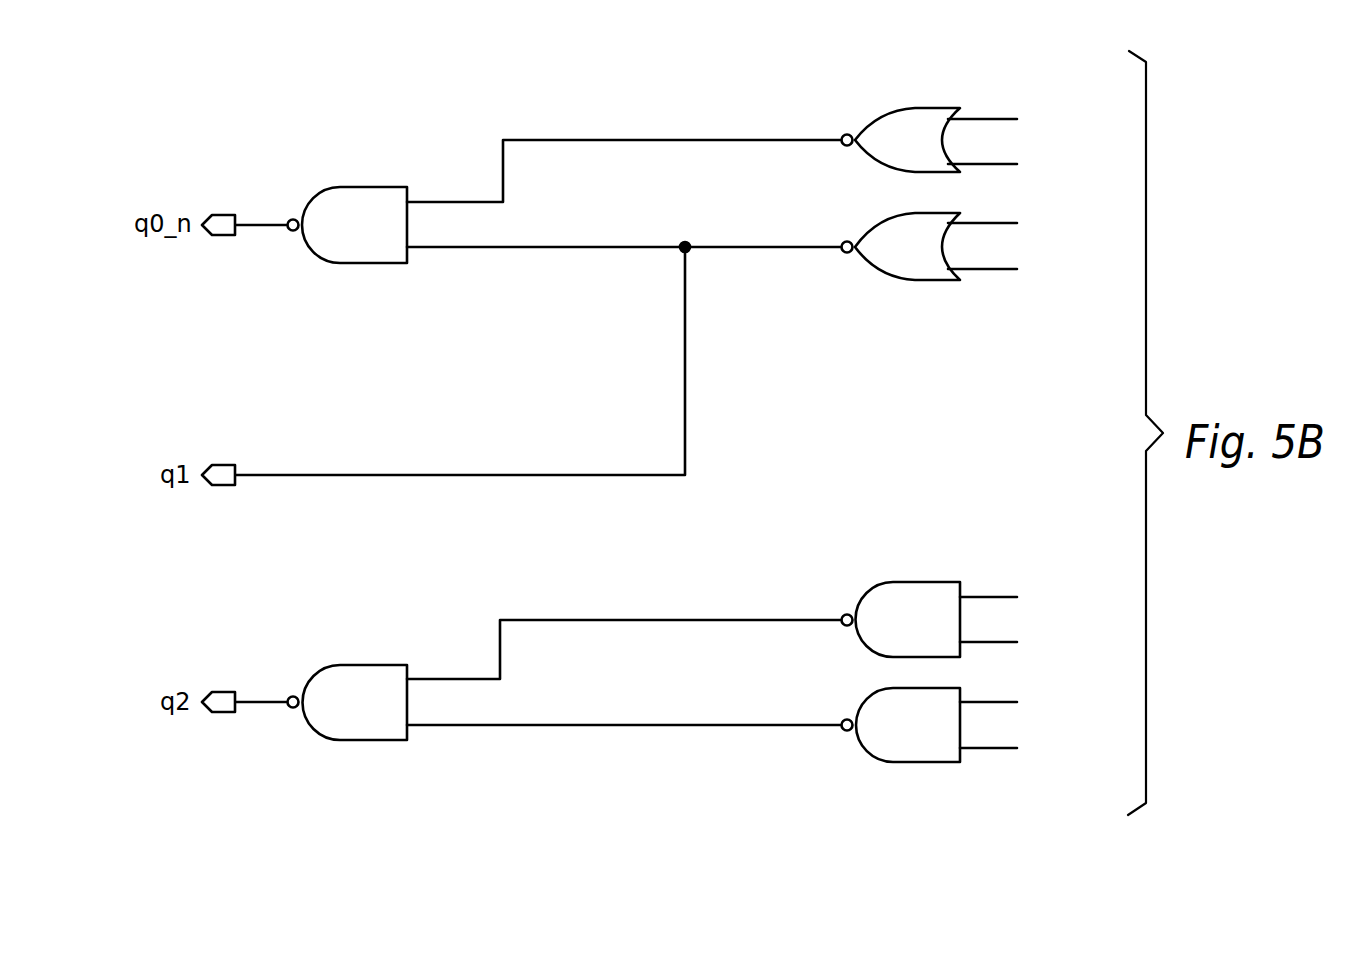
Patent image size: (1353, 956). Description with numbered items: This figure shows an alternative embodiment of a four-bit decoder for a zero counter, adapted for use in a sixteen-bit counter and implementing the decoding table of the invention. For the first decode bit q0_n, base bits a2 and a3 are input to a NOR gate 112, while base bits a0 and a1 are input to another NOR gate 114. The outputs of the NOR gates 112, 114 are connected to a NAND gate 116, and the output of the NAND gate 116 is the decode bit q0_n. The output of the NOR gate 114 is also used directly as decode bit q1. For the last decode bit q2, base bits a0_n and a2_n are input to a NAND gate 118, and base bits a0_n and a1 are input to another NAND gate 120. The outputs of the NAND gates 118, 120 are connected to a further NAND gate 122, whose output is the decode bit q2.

The NOR gate 112 is at (948, 108).
The NOR gate 114 is at (948, 280).
The NAND gate 116 is at (378, 187).
The NAND gate 118 is at (930, 582).
The NAND gate 120 is at (930, 762).
The NAND gate 122 is at (378, 665).